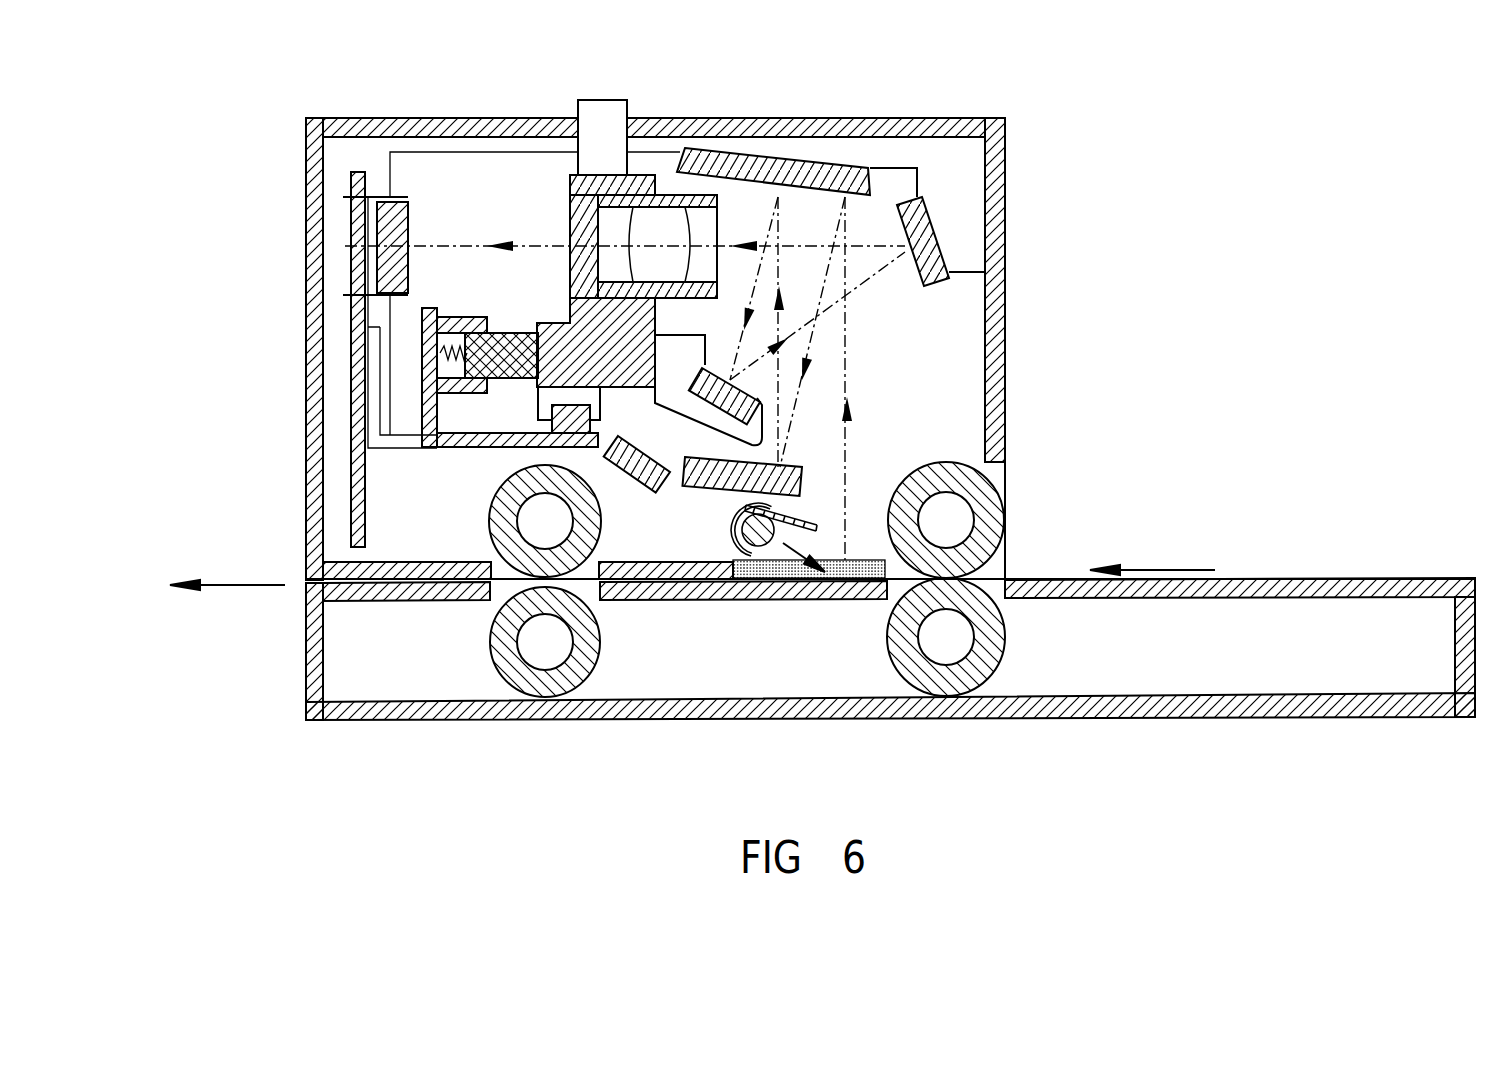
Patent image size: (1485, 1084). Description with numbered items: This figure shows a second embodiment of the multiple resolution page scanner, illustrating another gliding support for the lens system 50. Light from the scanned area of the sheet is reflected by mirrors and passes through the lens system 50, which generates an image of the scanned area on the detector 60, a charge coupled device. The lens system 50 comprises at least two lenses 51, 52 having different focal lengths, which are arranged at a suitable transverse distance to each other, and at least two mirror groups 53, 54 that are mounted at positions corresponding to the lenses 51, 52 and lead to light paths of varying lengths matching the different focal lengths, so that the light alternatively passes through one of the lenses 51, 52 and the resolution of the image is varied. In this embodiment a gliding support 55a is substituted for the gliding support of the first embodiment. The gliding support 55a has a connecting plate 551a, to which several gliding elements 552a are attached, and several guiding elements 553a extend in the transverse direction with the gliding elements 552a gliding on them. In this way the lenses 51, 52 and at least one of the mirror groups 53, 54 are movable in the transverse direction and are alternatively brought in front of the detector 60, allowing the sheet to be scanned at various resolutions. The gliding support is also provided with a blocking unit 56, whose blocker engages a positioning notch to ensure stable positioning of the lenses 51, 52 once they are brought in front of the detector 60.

The lens system 50 is at (558, 230).
The lens 51 is at (617, 225).
The lens 52 is at (582, 175).
The mirror group 53 is at (643, 472).
The mirror group 54 is at (740, 402).
The gliding support 55a is at (557, 315).
The connecting plate 551a is at (537, 389).
The gliding element 552a is at (543, 403).
The guiding element 553a is at (578, 422).
The blocking unit 56 is at (437, 323).
The detector 60 is at (377, 230).